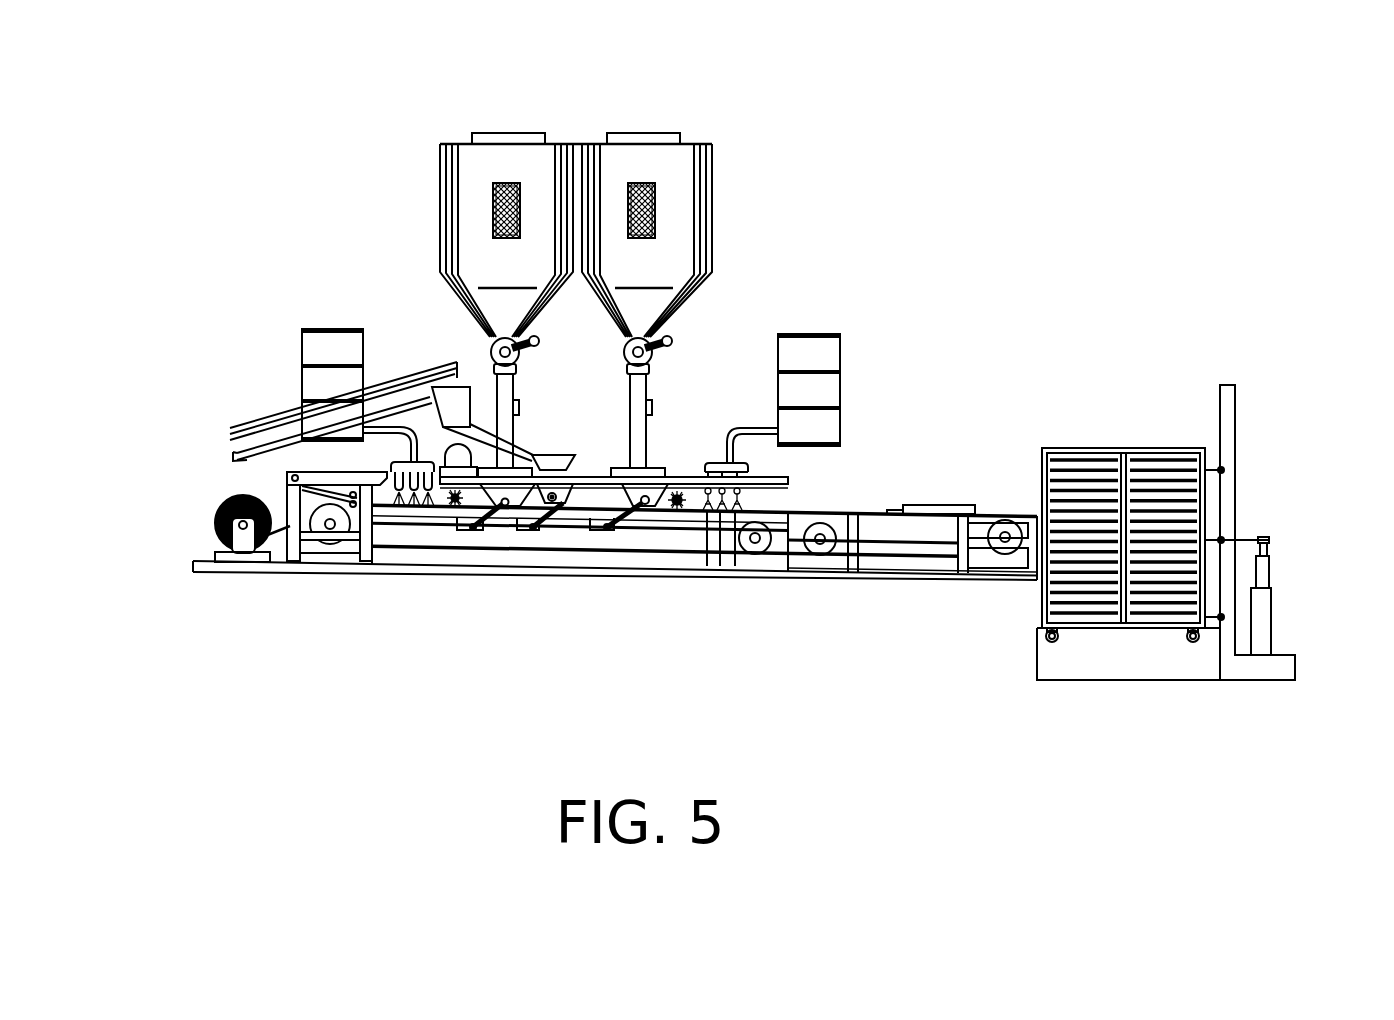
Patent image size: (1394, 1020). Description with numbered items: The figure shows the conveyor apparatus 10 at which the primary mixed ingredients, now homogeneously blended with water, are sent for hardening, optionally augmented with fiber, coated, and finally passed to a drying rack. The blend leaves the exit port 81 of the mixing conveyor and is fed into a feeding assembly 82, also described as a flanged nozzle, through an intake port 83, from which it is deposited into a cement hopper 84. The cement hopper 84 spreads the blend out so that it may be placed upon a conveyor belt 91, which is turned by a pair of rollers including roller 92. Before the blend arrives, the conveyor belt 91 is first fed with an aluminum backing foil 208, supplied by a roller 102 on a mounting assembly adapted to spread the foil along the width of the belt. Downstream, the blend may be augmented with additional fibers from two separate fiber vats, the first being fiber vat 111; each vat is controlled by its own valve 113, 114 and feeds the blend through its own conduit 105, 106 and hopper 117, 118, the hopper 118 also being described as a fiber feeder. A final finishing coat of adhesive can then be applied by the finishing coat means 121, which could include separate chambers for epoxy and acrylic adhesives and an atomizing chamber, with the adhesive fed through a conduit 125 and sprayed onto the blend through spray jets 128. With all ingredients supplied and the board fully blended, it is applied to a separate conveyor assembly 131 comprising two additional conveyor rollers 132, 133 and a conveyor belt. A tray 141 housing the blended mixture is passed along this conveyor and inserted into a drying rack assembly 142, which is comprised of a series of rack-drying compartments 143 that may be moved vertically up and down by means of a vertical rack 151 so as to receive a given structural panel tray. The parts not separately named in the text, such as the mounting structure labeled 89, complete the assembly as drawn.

The processing apparatus 10 is at (287, 487).
The exit port 81 is at (520, 415).
The feeding assembly 82 is at (519, 408).
The intake port 83 is at (432, 387).
The cement hopper 84 is at (556, 472).
The dispensing valve 89 is at (494, 366).
The conveyor belt 91 is at (460, 532).
The roller 92 is at (330, 550).
The roller 102 is at (240, 545).
The conduit 105 is at (505, 505).
The conduit 106 is at (700, 428).
The fiber vat 111 is at (576, 235).
The valve 113 is at (455, 322).
The valve 114 is at (688, 430).
The hopper 117 is at (533, 527).
The hopper 118 is at (642, 505).
The finishing coat means 121 is at (302, 331).
The conduit 125 is at (340, 405).
The spray jets 128 is at (405, 508).
The conveyor assembly 131 is at (950, 510).
The conveyor roller 132 is at (822, 522).
The conveyor roller 133 is at (1005, 557).
The tray 141 is at (975, 505).
The drying rack assembly 142 is at (1228, 420).
The rack-drying compartments 143 is at (1160, 463).
The vertical rack 151 is at (1272, 620).
The aluminum backing foil 208 is at (228, 512).